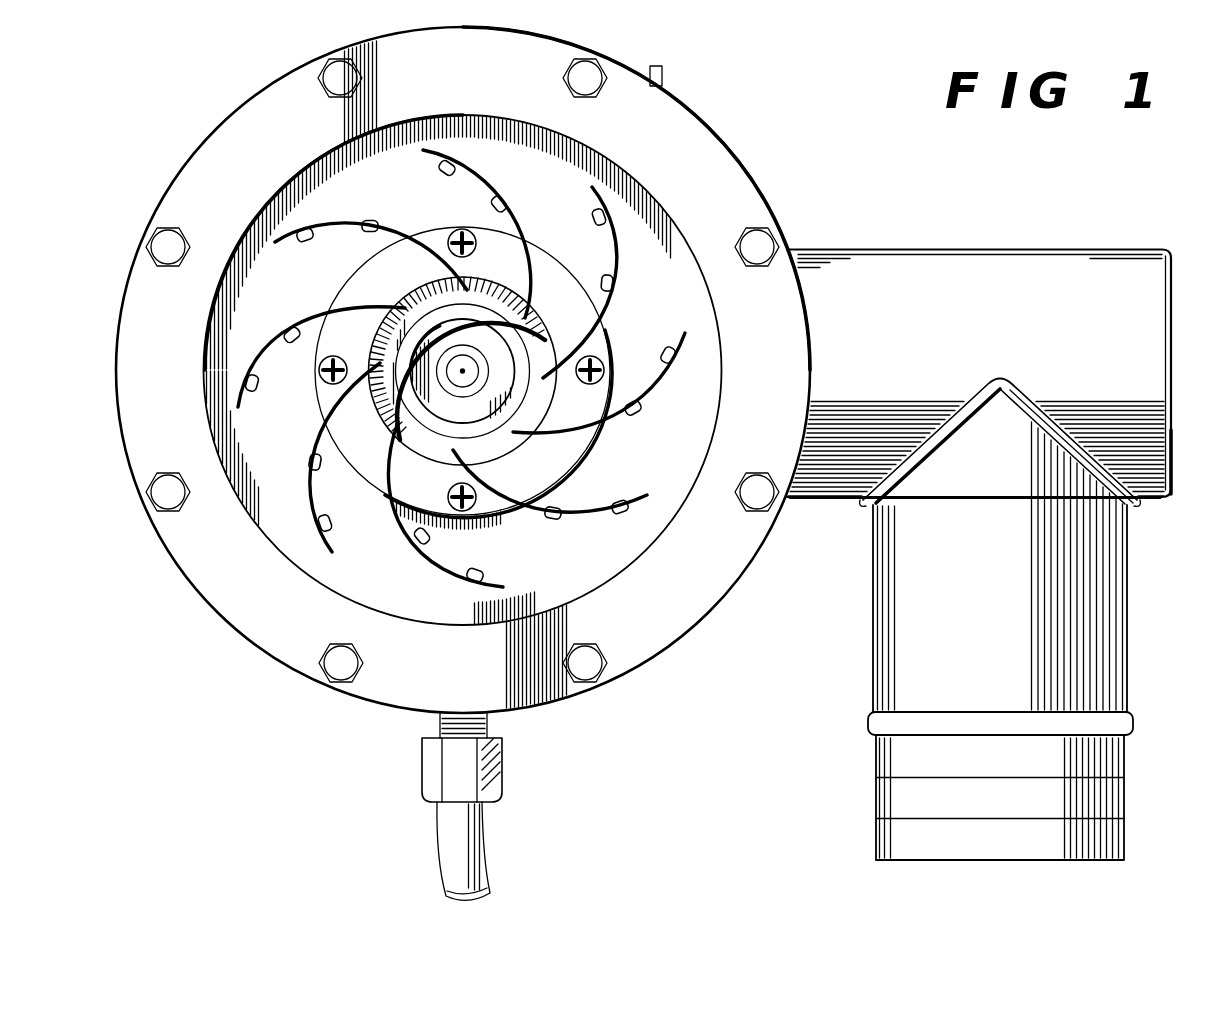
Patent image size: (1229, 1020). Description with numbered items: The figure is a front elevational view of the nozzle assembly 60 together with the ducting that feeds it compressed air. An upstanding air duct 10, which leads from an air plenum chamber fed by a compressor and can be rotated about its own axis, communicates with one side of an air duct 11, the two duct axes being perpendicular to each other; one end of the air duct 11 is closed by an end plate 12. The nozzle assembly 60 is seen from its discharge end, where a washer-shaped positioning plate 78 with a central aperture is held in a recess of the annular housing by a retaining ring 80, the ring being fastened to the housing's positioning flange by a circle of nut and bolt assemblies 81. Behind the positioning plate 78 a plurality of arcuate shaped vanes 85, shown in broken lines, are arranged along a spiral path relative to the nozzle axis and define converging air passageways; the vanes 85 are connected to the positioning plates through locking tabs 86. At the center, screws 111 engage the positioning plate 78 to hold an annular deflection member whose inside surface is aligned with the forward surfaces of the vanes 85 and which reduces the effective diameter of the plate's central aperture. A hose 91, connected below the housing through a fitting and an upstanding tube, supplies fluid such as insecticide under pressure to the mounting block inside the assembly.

The air duct 10 is at (1128, 616).
The air duct 11 is at (905, 249).
The end plate 12 is at (1170, 352).
The nozzle assembly 60 is at (779, 199).
The positioning plate 78 is at (560, 197).
The retaining ring 80 is at (718, 153).
The nut and bolt assemblies 81 is at (336, 72).
The arcuate shaped vanes 85 is at (620, 265).
The locking tabs 86 is at (624, 498).
The hose 91 is at (444, 838).
The screws 111 is at (598, 369).